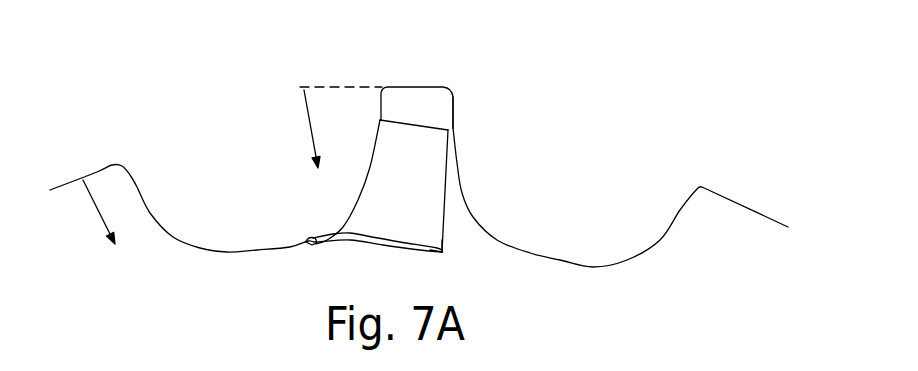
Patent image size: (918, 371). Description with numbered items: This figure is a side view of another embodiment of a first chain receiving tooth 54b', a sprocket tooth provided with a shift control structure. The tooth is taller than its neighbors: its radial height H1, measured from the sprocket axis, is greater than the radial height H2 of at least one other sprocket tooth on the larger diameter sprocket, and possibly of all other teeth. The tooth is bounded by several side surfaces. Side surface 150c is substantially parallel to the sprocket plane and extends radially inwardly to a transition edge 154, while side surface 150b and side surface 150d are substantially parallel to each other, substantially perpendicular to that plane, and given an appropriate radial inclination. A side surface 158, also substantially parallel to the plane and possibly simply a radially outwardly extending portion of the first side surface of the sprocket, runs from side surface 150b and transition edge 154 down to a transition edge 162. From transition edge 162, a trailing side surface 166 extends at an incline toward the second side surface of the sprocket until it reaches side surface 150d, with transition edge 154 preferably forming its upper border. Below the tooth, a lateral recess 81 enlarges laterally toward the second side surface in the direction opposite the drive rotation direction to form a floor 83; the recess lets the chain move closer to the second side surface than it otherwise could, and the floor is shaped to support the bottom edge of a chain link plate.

The first chain receiving tooth 54b' is at (297, 74).
The radial height of first chain receiving tooth H1 is at (306, 134).
The radial height of other sprocket tooth H2 is at (111, 231).
The side surface 150c is at (420, 92).
The side surface 150b is at (453, 106).
The transition edge 154 is at (407, 123).
The side surface 158 is at (455, 190).
The side surface 150d is at (357, 186).
The trailing side surface 166 is at (383, 207).
The lateral recess 81 is at (312, 243).
The floor 83 is at (343, 236).
The transition edge 162 is at (443, 233).